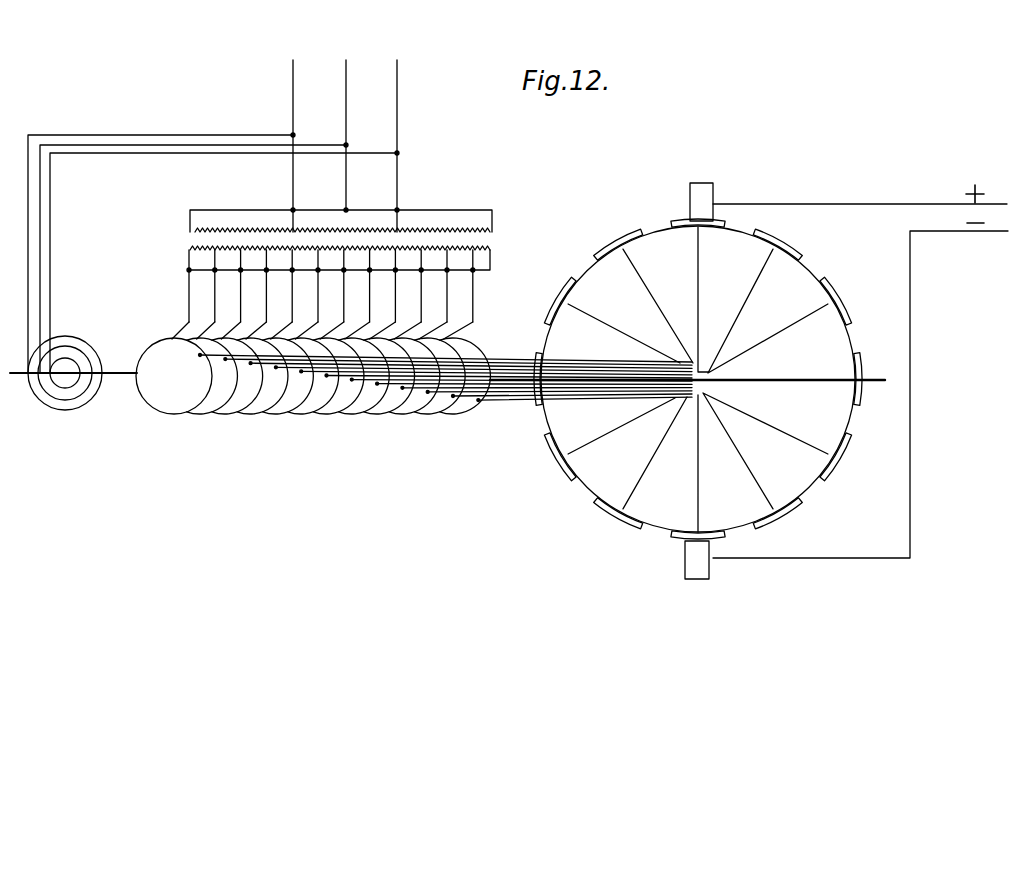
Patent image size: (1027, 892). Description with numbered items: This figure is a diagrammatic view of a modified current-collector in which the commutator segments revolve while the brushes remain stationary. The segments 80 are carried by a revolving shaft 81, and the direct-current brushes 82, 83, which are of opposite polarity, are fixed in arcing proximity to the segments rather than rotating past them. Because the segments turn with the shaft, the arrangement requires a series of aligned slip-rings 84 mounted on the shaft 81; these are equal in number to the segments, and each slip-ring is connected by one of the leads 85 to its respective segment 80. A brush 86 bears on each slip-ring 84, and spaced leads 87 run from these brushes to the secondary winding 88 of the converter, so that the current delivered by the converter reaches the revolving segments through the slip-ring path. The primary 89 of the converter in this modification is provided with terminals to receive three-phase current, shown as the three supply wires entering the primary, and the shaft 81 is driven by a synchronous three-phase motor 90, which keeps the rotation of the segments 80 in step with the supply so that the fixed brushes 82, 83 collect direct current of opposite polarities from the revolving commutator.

The segments 80 is at (823, 281).
The revolving shaft 81 is at (125, 378).
The direct-current brush 82 is at (712, 193).
The direct-current brush 83 is at (687, 557).
The slip-rings 84 is at (205, 406).
The leads 85 is at (505, 360).
The brush 86 is at (179, 337).
The spaced leads 87 is at (189, 290).
The secondary winding 88 is at (194, 249).
The primary 89 is at (195, 230).
The synchronous three-phase motor 90 is at (77, 404).